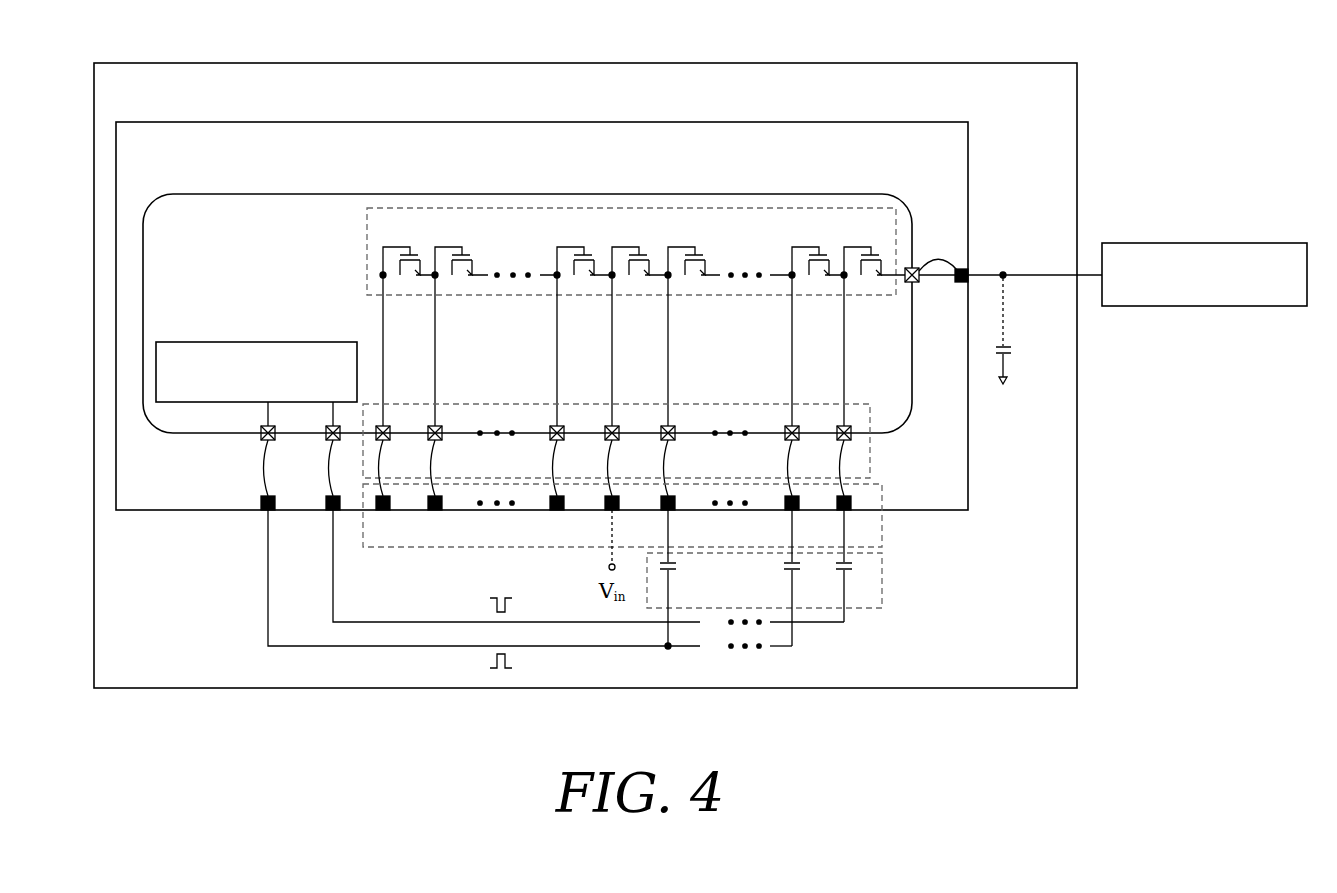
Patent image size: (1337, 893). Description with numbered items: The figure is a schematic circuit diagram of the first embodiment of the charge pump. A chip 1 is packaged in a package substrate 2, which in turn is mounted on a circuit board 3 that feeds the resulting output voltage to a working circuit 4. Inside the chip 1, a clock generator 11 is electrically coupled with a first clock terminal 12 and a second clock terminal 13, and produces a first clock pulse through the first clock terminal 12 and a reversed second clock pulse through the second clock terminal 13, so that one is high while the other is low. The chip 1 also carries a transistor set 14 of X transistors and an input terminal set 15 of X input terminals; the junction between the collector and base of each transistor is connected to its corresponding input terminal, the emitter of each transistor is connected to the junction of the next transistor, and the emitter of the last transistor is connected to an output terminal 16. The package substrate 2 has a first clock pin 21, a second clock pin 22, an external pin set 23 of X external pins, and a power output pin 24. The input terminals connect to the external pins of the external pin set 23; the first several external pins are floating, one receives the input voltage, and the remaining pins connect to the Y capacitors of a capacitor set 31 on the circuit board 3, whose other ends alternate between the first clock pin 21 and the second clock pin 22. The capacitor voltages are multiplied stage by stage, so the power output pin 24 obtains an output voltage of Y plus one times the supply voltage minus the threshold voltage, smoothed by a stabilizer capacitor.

The chip 1 is at (277, 194).
The package substrate 2 is at (497, 122).
The circuit board 3 is at (668, 63).
The working circuit 4 is at (1203, 243).
The clock generator 11 is at (265, 342).
The first clock terminal 12 is at (261, 440).
The second clock terminal 13 is at (326, 440).
The transistor set 14 is at (735, 208).
The input terminal set 15 is at (870, 447).
The output terminal 16 is at (919, 280).
The first clock pin 21 is at (261, 511).
The second clock pin 22 is at (326, 511).
The external pin set 23 is at (882, 535).
The power output pin 24 is at (963, 268).
The capacitor set 31 is at (882, 578).